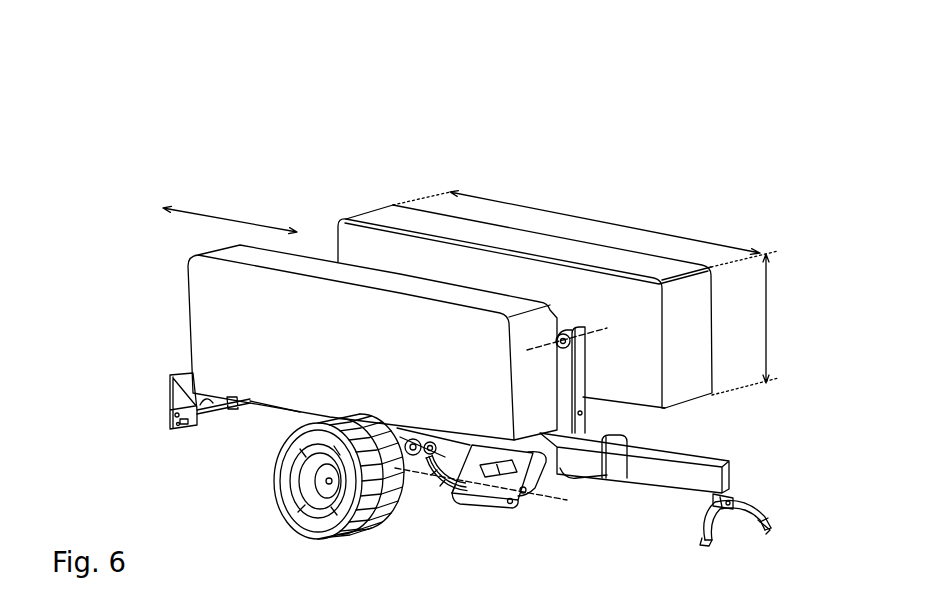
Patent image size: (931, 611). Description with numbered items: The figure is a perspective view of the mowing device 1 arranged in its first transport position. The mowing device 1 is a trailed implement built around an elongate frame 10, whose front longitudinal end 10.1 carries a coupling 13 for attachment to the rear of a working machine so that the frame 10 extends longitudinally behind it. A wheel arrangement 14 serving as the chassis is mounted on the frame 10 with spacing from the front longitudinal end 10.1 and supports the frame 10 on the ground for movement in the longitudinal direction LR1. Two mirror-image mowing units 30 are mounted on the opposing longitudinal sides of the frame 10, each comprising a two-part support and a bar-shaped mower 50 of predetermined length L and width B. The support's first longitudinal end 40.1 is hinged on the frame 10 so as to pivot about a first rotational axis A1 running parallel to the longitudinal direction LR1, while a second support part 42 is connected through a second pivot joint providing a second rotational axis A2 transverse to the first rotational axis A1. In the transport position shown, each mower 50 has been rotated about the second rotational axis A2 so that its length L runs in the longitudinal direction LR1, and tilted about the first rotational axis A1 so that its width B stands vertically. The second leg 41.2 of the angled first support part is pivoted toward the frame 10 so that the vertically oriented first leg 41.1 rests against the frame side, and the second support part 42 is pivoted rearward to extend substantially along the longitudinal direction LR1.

The mowing device 1 is at (604, 132).
The frame 10 is at (638, 469).
The front longitudinal end 10.1 is at (693, 499).
The coupling 13 is at (764, 494).
The wheel arrangement 14 is at (262, 469).
The mowing unit 30 is at (704, 202).
The first longitudinal end 40.1 is at (449, 507).
The first leg 41.1 is at (583, 413).
The second leg 41.2 is at (489, 504).
The second support part 42 is at (560, 327).
The bar-shaped mower 50 is at (352, 203).
The first rotational axis A1 is at (558, 497).
The second rotational axis A2 is at (604, 325).
The length L is at (630, 228).
The width B is at (766, 317).
The longitudinal direction LR1 is at (265, 178).